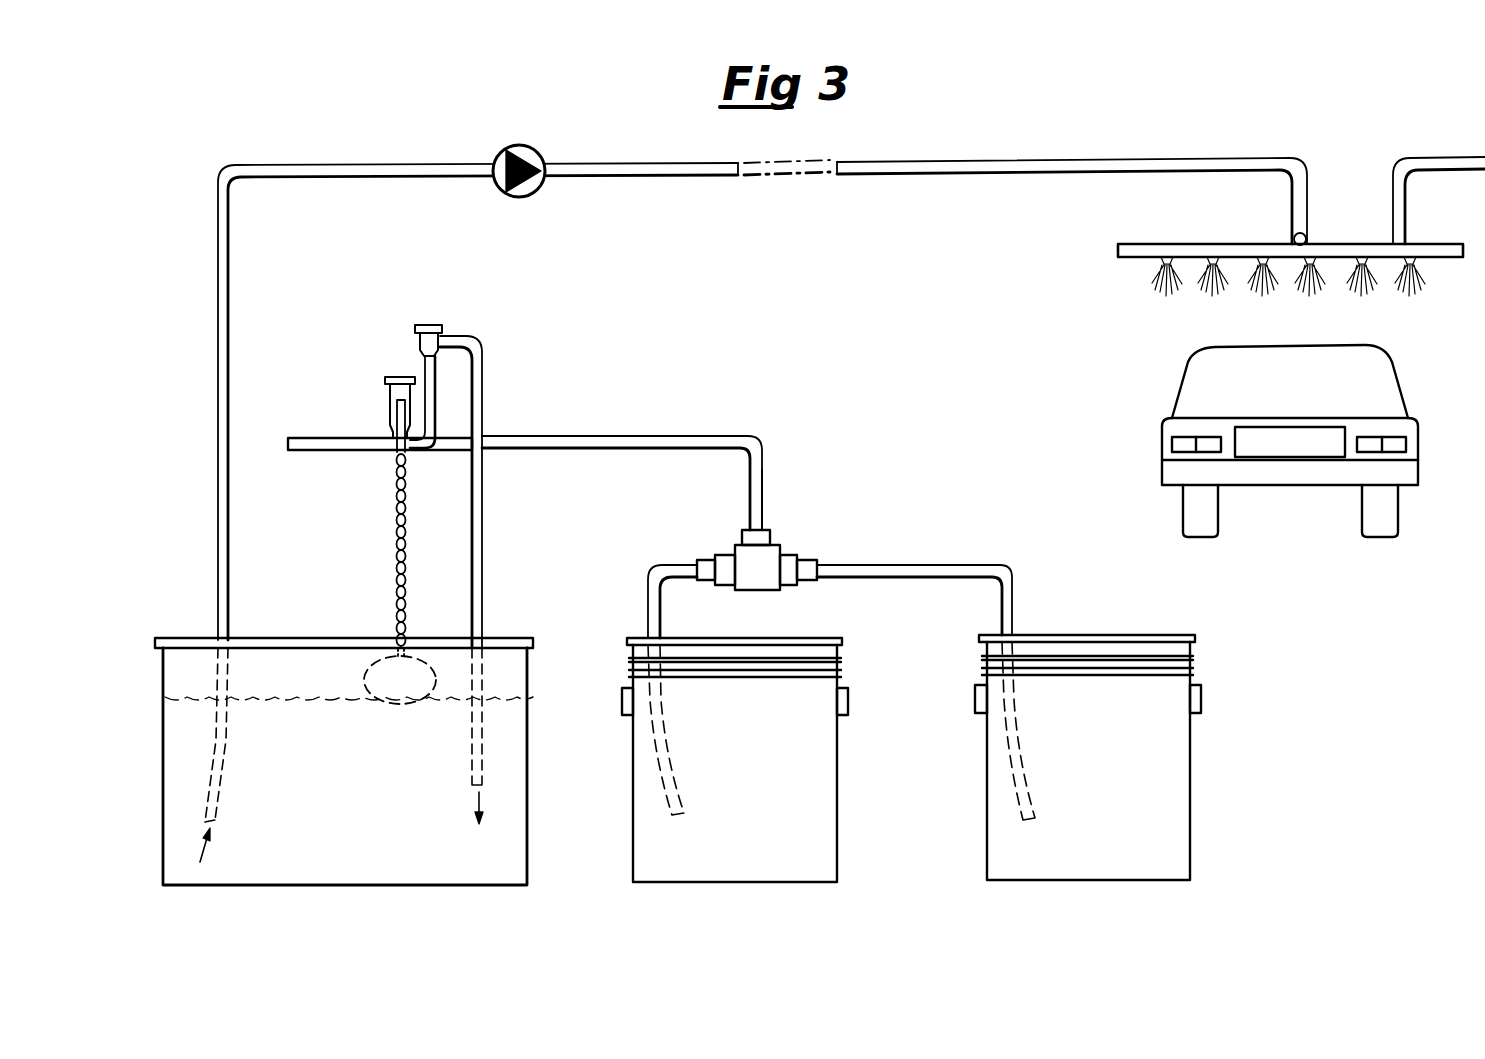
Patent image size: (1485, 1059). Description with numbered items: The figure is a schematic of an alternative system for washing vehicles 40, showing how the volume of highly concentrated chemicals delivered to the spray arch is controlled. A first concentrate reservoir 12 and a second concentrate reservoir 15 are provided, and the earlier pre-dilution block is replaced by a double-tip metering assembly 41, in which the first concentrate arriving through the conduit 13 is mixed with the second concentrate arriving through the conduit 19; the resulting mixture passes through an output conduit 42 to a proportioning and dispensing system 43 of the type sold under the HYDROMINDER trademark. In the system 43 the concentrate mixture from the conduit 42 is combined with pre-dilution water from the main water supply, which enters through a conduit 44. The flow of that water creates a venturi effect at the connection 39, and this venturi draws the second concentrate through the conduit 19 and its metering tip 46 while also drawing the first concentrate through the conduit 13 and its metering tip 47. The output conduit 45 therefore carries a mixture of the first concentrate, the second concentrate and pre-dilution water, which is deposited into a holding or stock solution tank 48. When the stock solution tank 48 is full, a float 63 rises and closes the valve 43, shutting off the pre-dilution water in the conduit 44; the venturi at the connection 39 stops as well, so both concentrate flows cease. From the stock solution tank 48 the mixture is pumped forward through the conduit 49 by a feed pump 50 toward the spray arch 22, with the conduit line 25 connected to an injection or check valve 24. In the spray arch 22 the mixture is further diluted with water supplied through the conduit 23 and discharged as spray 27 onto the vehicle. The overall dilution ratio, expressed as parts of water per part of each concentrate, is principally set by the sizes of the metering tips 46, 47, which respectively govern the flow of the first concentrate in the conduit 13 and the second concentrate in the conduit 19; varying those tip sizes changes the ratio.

The first concentrate reservoir 12 is at (778, 884).
The conduit 13 is at (645, 593).
The second concentrate reservoir 15 is at (1103, 882).
The conduit 19 is at (1014, 590).
The spray arch 22 is at (1178, 244).
The conduit 23 is at (1428, 157).
The injection or check valve 24 is at (1306, 234).
The conduit line 25 is at (893, 160).
The spray 27 is at (1252, 308).
The connection 39 is at (484, 437).
The system for washing vehicles 40 is at (356, 483).
The double-tip metering assembly 41 is at (791, 541).
The output conduit 42 is at (766, 470).
The proportioning and dispensing system 43 is at (387, 398).
The conduit 44 is at (313, 437).
The output conduit 45 is at (484, 580).
The metering tip 46 is at (811, 558).
The metering tip 47 is at (708, 558).
The stock solution tank 48 is at (465, 887).
The conduit 49 is at (352, 162).
The feed pump 50 is at (527, 146).
The float 63 is at (388, 658).